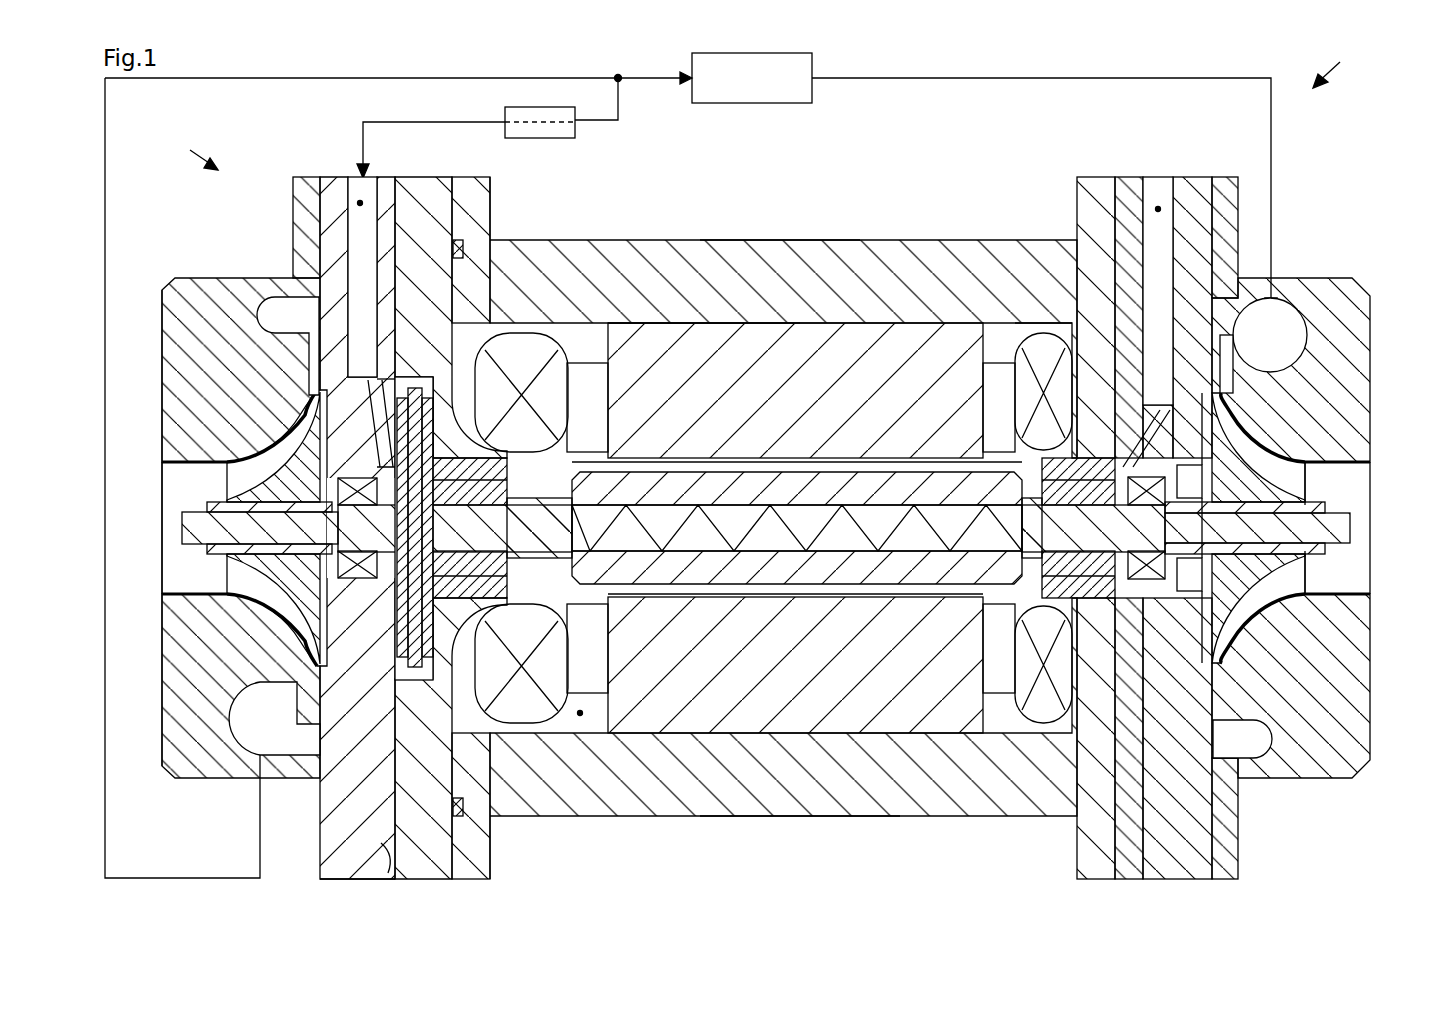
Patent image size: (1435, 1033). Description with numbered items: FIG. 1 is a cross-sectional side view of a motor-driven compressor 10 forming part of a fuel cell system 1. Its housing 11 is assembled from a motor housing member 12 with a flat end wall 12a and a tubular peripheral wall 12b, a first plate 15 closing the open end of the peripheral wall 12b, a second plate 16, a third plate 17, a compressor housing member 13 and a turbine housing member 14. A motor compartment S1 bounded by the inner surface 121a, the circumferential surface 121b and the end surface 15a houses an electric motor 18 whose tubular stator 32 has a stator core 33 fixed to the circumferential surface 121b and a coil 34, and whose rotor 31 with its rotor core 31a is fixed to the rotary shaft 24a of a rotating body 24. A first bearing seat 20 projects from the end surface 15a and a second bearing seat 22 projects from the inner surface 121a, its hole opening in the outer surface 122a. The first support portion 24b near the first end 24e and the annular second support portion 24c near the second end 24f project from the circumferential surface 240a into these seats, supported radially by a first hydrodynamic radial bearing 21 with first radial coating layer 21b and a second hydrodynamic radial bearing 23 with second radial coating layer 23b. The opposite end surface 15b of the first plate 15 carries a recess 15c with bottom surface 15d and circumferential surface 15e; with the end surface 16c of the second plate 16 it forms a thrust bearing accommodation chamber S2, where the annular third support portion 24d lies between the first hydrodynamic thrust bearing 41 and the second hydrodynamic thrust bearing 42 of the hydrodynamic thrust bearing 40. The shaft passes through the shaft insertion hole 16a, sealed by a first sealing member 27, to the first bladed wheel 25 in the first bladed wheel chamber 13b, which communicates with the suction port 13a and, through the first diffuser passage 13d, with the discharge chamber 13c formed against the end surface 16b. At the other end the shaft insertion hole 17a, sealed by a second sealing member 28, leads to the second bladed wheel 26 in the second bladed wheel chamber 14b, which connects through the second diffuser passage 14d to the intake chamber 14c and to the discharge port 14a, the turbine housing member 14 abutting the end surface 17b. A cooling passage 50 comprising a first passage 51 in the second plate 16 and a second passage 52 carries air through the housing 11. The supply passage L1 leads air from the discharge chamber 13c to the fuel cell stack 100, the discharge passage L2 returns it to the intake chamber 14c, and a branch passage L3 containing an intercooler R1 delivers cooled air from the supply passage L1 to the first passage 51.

The fuel cell system 1 is at (1333, 61).
The motor-driven compressor 10 is at (189, 149).
The housing 11 is at (205, 278).
The motor housing member 12 is at (882, 240).
The end wall 12a is at (1092, 177).
The peripheral wall 12b is at (770, 240).
The compressor housing member 13 is at (248, 278).
The suction port 13a is at (170, 552).
The first bladed wheel chamber 13b is at (242, 480).
The discharge chamber 13c is at (260, 720).
The first diffuser passage 13d is at (314, 681).
The turbine housing member 14 is at (1292, 278).
The discharge port 14a is at (1355, 553).
The second bladed wheel chamber 14b is at (1268, 477).
The intake chamber 14c is at (1270, 335).
The second diffuser passage 14d is at (1217, 377).
The first plate 15 is at (415, 180).
The end surface 15a is at (470, 185).
The end surface 15b is at (388, 879).
The recess 15c is at (428, 380).
The bottom surface 15d is at (433, 685).
The circumferential surface 15e is at (388, 735).
The second plate 16 is at (330, 879).
The shaft insertion hole 16a is at (372, 395).
The end surface 16b is at (300, 180).
The end surface 16c is at (413, 879).
The third plate 17 is at (1198, 185).
The shaft insertion hole 17a is at (1170, 465).
The end surface 17b is at (1218, 879).
The electric motor 18 is at (632, 312).
The first bearing seat 20 is at (487, 620).
The first hydrodynamic radial bearing 21 is at (560, 390).
The first radial coating layer 21b is at (622, 538).
The second bearing seat 22 is at (1040, 640).
The second hydrodynamic radial bearing 23 is at (1020, 427).
The second radial coating layer 23b is at (1010, 495).
The rotating body 24 is at (645, 585).
The rotary shaft 24a is at (682, 560).
The first support portion 24b is at (612, 578).
The second support portion 24c is at (1045, 565).
The third support portion 24d is at (440, 492).
The first end 24e is at (190, 527).
The second end 24f is at (1340, 532).
The first bladed wheel 25 is at (270, 562).
The second bladed wheel 26 is at (1262, 562).
The first sealing member 27 is at (322, 524).
The second sealing member 28 is at (1145, 492).
The rotor 31 is at (830, 583).
The rotor core 31a is at (778, 585).
The stator 32 is at (835, 733).
The stator core 33 is at (785, 733).
The coil 34 is at (1045, 345).
The hydrodynamic thrust bearing 40 is at (388, 601).
The first hydrodynamic thrust bearing 41 is at (430, 560).
The second hydrodynamic thrust bearing 42 is at (400, 680).
The cooling passage 50 is at (348, 165).
The first passage 51 is at (358, 203).
The second passage 52 is at (1158, 207).
The fuel cell stack 100 is at (752, 104).
The inner surface 121a is at (1080, 683).
The circumferential surface 121b is at (682, 330).
The outer surface 122a is at (1125, 879).
The circumferential surface 240a is at (737, 493).
The supply passage L1 is at (178, 878).
The discharge passage L2 is at (945, 78).
The branch passage L3 is at (620, 105).
The intercooler R1 is at (540, 139).
The motor compartment S1 is at (580, 716).
The thrust bearing accommodation chamber S2 is at (424, 381).